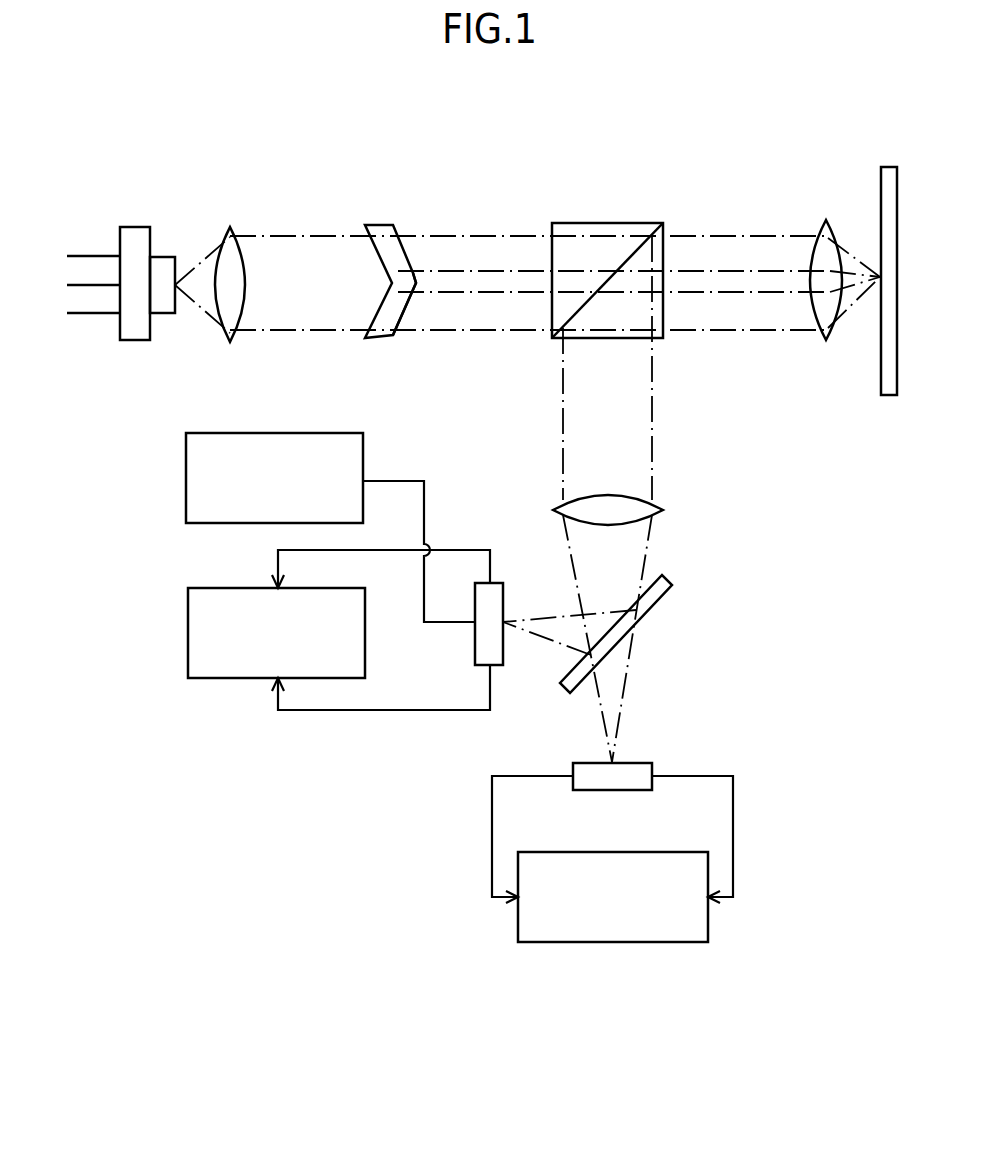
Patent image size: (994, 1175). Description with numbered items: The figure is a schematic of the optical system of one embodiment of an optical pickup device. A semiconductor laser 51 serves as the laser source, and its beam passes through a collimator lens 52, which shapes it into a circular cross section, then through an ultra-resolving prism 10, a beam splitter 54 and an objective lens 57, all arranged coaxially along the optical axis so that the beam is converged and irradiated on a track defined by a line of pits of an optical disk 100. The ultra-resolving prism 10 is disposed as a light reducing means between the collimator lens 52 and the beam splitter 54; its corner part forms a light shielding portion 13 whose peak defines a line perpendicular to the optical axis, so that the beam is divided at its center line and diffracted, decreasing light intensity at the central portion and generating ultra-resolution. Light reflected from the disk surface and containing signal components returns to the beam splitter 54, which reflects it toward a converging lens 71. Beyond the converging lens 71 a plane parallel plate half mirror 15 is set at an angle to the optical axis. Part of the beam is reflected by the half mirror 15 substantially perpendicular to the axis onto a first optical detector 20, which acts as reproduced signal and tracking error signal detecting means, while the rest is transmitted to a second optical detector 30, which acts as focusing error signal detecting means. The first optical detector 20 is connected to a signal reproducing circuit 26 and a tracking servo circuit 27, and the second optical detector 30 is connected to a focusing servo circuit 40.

The semiconductor laser 51 is at (133, 227).
The collimator lens 52 is at (230, 225).
The ultra-resolving prism 10 is at (368, 225).
The light shielding portion 13 is at (416, 278).
The beam splitter 54 is at (587, 223).
The objective lens 57 is at (822, 220).
The optical disk 100 is at (881, 195).
The converging lens 71 is at (663, 510).
The plane parallel plate half mirror 15 is at (655, 608).
The first optical detector 20 is at (475, 638).
The second optical detector 30 is at (652, 763).
The signal reproducing circuit 26 is at (186, 477).
The tracking servo circuit 27 is at (188, 643).
The focusing servo circuit 40 is at (670, 942).